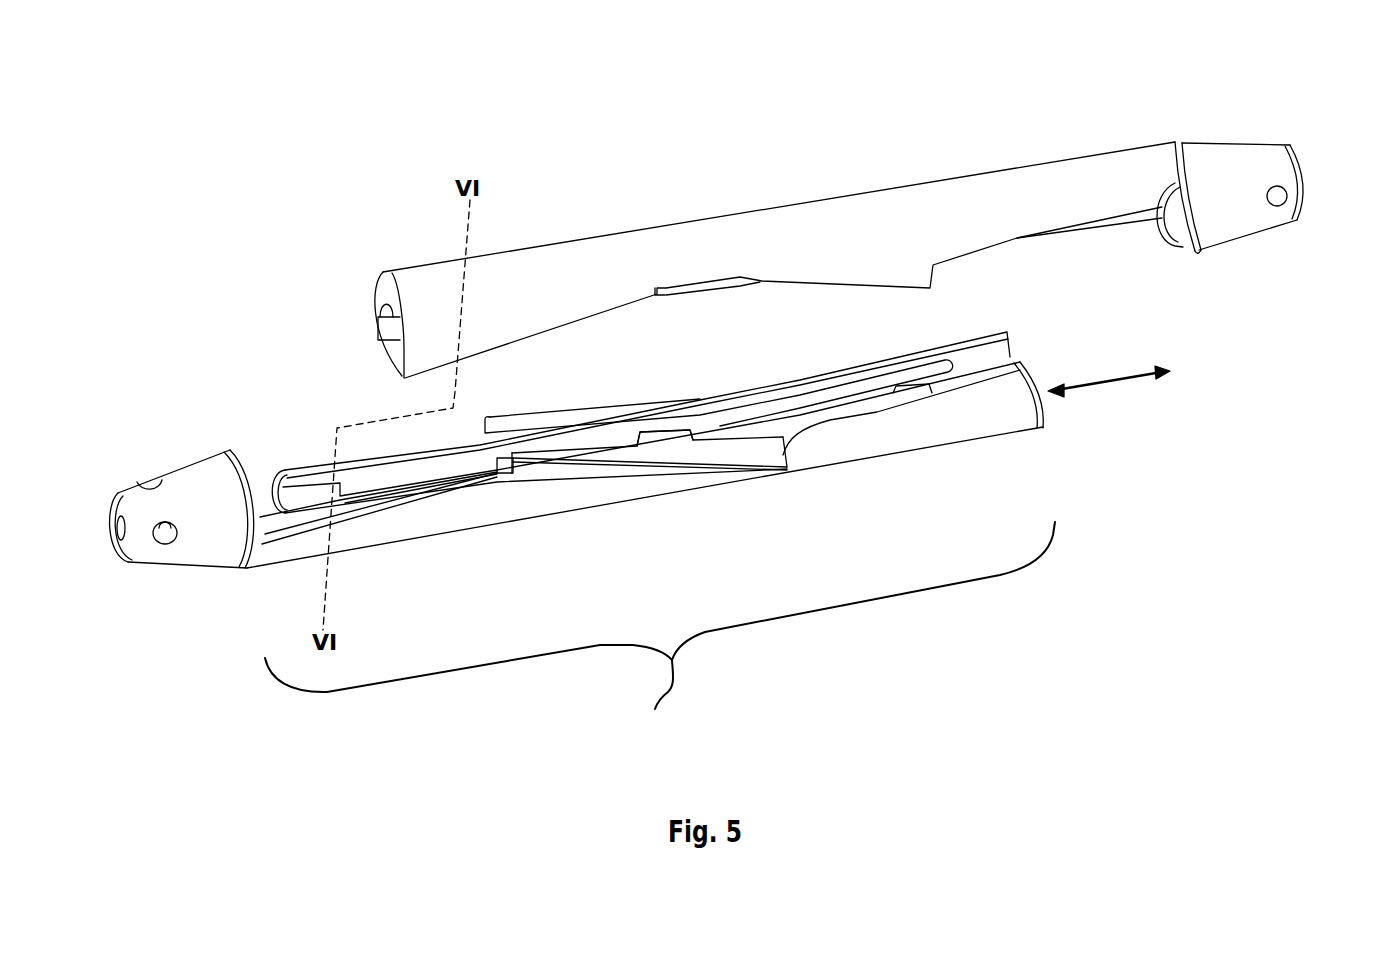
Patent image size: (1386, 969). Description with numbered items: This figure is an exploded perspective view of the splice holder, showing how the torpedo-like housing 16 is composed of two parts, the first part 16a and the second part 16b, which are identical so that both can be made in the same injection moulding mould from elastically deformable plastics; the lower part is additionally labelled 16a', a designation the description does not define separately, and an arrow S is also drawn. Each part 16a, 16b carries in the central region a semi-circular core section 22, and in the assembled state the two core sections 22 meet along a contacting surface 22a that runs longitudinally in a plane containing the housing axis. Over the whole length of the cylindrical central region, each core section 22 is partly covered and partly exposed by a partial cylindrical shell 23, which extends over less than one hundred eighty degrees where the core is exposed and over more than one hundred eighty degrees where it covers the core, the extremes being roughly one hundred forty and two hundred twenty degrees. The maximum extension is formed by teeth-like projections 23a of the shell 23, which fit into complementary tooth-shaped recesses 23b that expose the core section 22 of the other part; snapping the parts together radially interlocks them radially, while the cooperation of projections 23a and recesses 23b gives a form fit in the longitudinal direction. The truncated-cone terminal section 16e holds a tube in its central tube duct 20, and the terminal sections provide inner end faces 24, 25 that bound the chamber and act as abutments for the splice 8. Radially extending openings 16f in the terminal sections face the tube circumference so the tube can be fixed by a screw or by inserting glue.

The housing 16 is at (963, 118).
The first part 16a is at (775, 260).
The lower tube half 16a' is at (651, 582).
The second part 16b is at (244, 590).
The terminal section 16e is at (1225, 120).
The radially extending openings 16f is at (1289, 210).
The central tube duct 20 is at (109, 535).
The semi-circular core section 22 is at (288, 540).
The contacting surface 22a is at (367, 504).
The partial cylindrical shell 23 is at (1092, 163).
The teeth-like projections 23a is at (519, 455).
The tooth-shaped recesses 23b is at (670, 283).
The inner end face 24 is at (366, 293).
The inner end face 25 is at (270, 497).
The splice 8 is at (670, 438).
The sliding direction S is at (1110, 383).